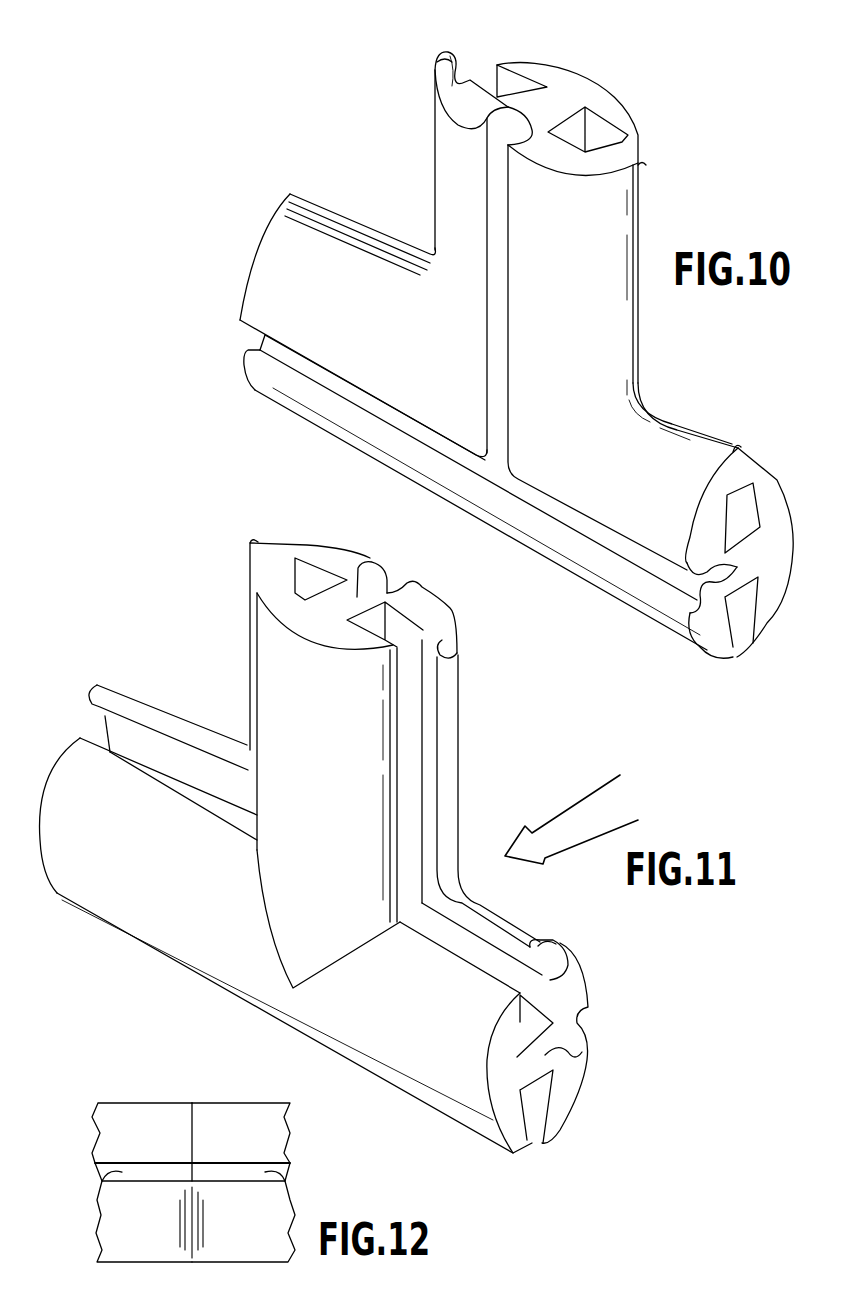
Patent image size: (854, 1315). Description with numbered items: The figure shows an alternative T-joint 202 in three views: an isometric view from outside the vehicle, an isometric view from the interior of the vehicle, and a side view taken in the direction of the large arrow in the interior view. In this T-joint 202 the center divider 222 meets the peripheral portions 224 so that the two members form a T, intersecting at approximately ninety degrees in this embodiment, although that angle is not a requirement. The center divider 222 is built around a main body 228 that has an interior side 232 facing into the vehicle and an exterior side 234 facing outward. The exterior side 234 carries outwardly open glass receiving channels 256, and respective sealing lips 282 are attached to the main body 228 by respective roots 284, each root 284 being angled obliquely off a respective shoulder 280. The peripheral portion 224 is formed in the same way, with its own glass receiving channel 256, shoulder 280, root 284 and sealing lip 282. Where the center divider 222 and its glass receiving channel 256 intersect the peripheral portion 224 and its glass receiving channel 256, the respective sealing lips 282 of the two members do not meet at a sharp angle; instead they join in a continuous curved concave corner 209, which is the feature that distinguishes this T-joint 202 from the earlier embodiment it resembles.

In FIG. 10, the T-joint 202 is at (178, 222).
In FIG. 11, the T-joint 202 is at (96, 560).
In FIG. 10, the continuous curved concave corner 209 is at (428, 256).
In FIG. 11, the continuous curved concave corner 209 is at (246, 752).
In FIG. 12, the continuous curved concave corner 209 is at (212, 1220).
In FIG. 10, the center divider 222 is at (383, 98).
In FIG. 11, the center divider 222 is at (238, 623).
In FIG. 12, the center divider 222 is at (245, 1093).
In FIG. 10, the peripheral portion 224 is at (252, 232).
In FIG. 11, the peripheral portion 224 is at (57, 715).
In FIG. 12, the peripheral portion 224 is at (113, 1093).
In FIG. 10, the main body 228 is at (552, 153).
In FIG. 11, the main body 228 is at (323, 620).
In FIG. 10, the interior side 232 is at (638, 140).
In FIG. 11, the interior side 232 is at (345, 745).
In FIG. 12, the interior side 232 is at (230, 1123).
In FIG. 10, the exterior side 234 is at (450, 172).
In FIG. 11, the exterior side 234 is at (442, 595).
In FIG. 10, the glass receiving channel 256 is at (515, 75).
In FIG. 11, the glass receiving channel 256 is at (317, 578).
In FIG. 12, the glass receiving channel 256 is at (133, 1167).
In FIG. 10, the shoulder 280 is at (455, 128).
In FIG. 11, the shoulder 280 is at (447, 600).
In FIG. 10, the sealing lip 282 is at (447, 52).
In FIG. 11, the sealing lip 282 is at (248, 545).
In FIG. 12, the sealing lip 282 is at (100, 1175).
In FIG. 10, the root 284 is at (434, 88).
In FIG. 11, the root 284 is at (295, 538).
In FIG. 12, the root 284 is at (165, 1264).